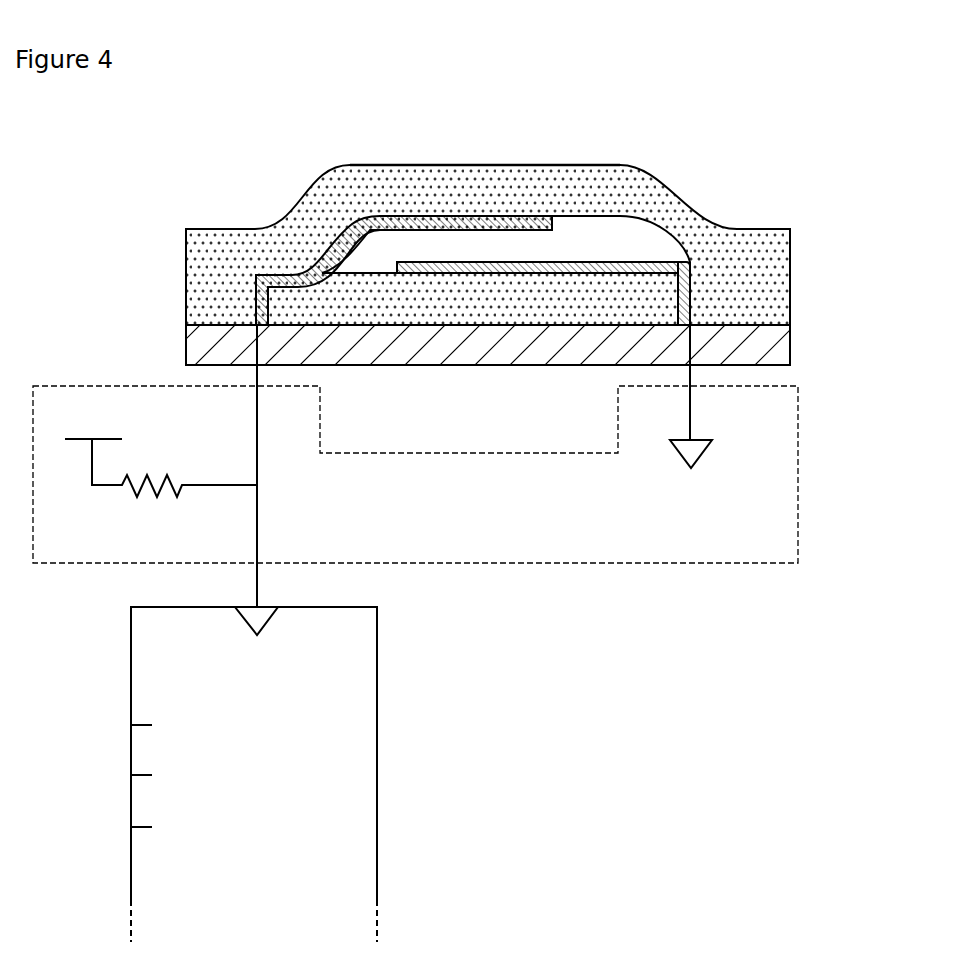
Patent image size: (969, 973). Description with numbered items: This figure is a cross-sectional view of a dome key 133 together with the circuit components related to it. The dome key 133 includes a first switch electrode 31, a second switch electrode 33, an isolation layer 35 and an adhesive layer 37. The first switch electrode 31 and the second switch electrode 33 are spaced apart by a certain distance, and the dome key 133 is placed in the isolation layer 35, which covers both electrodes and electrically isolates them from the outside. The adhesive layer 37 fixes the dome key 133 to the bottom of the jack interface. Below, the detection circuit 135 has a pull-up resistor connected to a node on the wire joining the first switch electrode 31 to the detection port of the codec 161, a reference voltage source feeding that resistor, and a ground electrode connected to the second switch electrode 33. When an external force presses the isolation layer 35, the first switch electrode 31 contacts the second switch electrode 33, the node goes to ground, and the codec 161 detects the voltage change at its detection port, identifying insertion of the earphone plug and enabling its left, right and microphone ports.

The first switch electrode 31 is at (362, 233).
The second switch electrode 33 is at (470, 272).
The isolation layer 35 is at (490, 165).
The adhesive layer 37 is at (767, 352).
The dome key 133 is at (703, 182).
The detection circuit 135 is at (800, 473).
The CODEC 161 is at (379, 652).